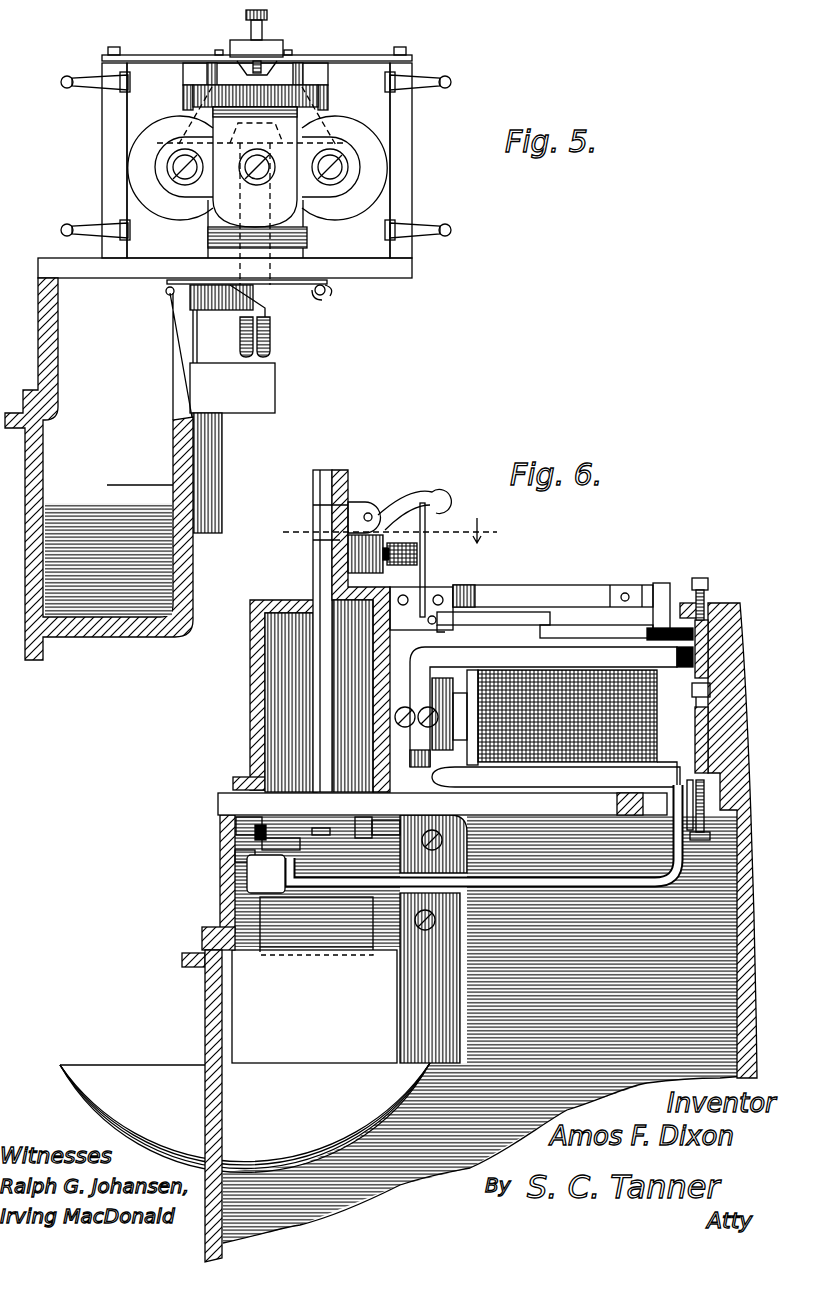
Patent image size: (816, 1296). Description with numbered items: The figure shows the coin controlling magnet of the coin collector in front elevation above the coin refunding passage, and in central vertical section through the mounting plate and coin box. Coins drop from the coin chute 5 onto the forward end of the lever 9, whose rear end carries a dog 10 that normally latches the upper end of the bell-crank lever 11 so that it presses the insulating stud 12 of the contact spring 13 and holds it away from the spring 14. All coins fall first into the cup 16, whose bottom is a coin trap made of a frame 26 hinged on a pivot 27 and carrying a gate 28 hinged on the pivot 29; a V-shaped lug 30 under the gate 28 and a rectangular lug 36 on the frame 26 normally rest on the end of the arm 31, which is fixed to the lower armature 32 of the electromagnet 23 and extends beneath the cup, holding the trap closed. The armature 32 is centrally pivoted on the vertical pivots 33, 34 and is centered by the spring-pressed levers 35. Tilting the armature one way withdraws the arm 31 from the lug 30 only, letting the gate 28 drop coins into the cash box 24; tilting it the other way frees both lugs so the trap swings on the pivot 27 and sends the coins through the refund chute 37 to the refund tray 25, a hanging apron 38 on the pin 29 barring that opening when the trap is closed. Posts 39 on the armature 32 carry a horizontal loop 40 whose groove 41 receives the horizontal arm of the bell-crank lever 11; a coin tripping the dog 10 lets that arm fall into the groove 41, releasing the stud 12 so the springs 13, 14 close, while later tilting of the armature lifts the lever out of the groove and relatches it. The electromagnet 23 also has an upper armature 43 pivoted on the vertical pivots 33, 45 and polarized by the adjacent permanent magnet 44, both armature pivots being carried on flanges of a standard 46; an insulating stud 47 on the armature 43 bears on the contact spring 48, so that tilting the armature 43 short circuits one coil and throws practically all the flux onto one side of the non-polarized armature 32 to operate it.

In FIG. 6, the coin chute 5 is at (313, 483).
In FIG. 6, the lever 9 is at (313, 508).
In FIG. 6, the dog 10 is at (433, 508).
In FIG. 6, the bell-crank lever 11 is at (526, 605).
In FIG. 6, the insulating stud 12 is at (417, 556).
In FIG. 6, the contact spring 13 is at (383, 570).
In FIG. 6, the spring 14 is at (402, 546).
In FIG. 6, the cup 16 is at (250, 700).
In FIG. 5, the electromagnet 23 is at (170, 220).
In FIG. 6, the electromagnet 23 is at (530, 758).
In FIG. 6, the cash box 24 is at (484, 1159).
In FIG. 5, the refund tray 25 is at (109, 545).
In FIG. 6, the refund tray 25 is at (245, 1117).
In FIG. 5, the frame 26 is at (323, 296).
In FIG. 6, the frame 26 is at (270, 820).
In FIG. 5, the pivot 27 is at (333, 291).
In FIG. 6, the pivot 27 is at (346, 825).
In FIG. 6, the gate 28 is at (319, 828).
In FIG. 5, the pivot 29 is at (168, 295).
In FIG. 5, the V-shaped lug 30 is at (268, 305).
In FIG. 6, the V-shaped lug 30 is at (235, 858).
In FIG. 5, the arm 31 is at (270, 343).
In FIG. 6, the arm 31 is at (462, 839).
In FIG. 6, the armature 32 is at (708, 757).
In FIG. 6, the vertical pivot 33 is at (708, 700).
In FIG. 6, the vertical pivot 34 is at (706, 790).
In FIG. 5, the centralizing spring-pressed lever 35 is at (177, 60).
In FIG. 5, the rectangular lug 36 is at (219, 314).
In FIG. 6, the rectangular lug 36 is at (235, 841).
In FIG. 5, the refund chute 37 is at (99, 469).
In FIG. 5, the apron 38 is at (176, 392).
In FIG. 6, the apron 38 is at (316, 926).
In FIG. 5, the post 39 is at (184, 90).
In FIG. 6, the post 39 is at (745, 665).
In FIG. 5, the loop 40 is at (322, 75).
In FIG. 6, the loop 40 is at (545, 625).
In FIG. 5, the groove 41 is at (246, 66).
In FIG. 6, the groove 41 is at (540, 628).
In FIG. 5, the armature 43 is at (210, 98).
In FIG. 6, the armature 43 is at (708, 650).
In FIG. 5, the permanent magnet 44 is at (290, 115).
In FIG. 6, the permanent magnet 44 is at (551, 704).
In FIG. 5, the vertical pivot 45 is at (263, 28).
In FIG. 6, the vertical pivot 45 is at (709, 591).
In FIG. 5, the standard 46 is at (276, 52).
In FIG. 6, the standard 46 is at (741, 604).
In FIG. 6, the stud 47 is at (676, 648).
In FIG. 6, the contact spring 48 is at (660, 583).